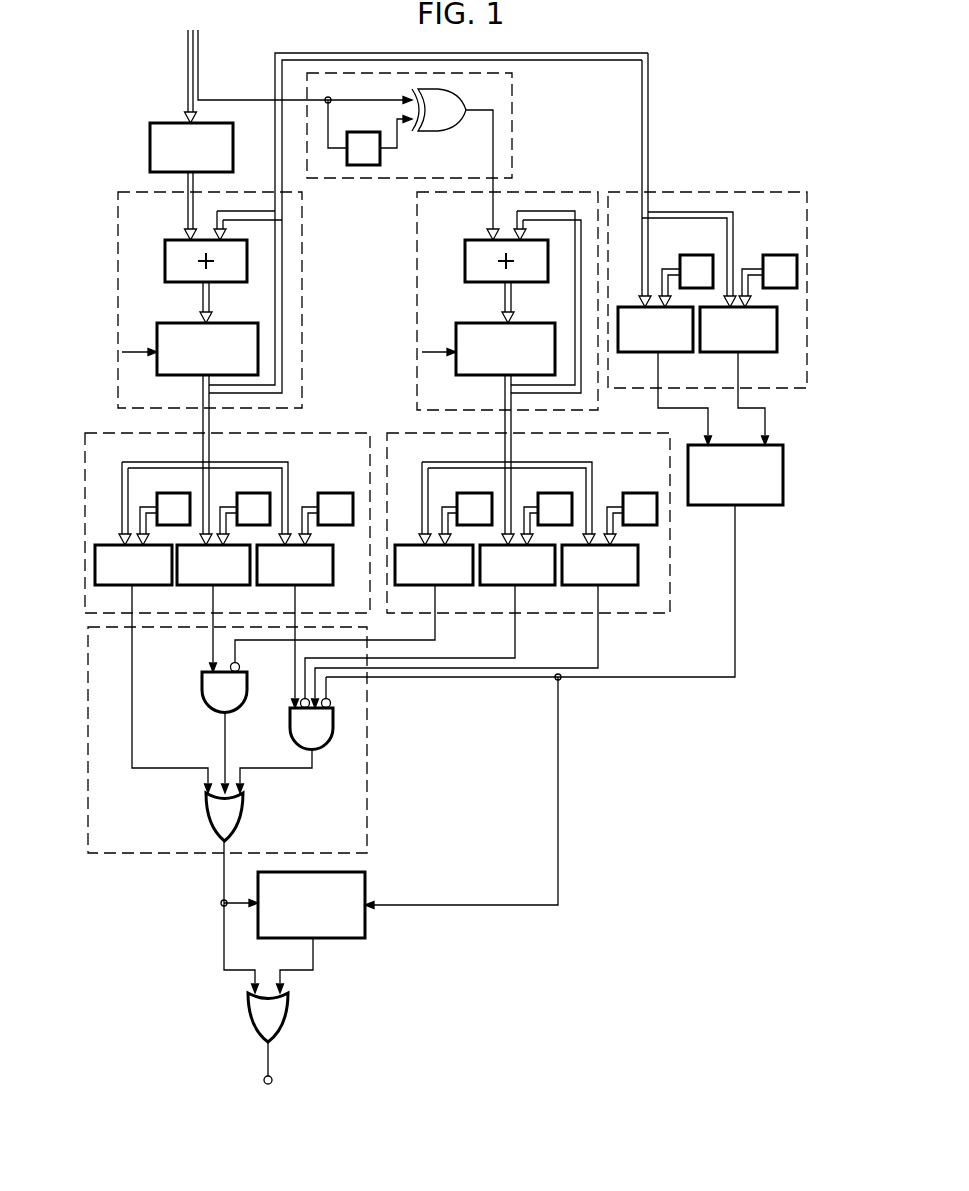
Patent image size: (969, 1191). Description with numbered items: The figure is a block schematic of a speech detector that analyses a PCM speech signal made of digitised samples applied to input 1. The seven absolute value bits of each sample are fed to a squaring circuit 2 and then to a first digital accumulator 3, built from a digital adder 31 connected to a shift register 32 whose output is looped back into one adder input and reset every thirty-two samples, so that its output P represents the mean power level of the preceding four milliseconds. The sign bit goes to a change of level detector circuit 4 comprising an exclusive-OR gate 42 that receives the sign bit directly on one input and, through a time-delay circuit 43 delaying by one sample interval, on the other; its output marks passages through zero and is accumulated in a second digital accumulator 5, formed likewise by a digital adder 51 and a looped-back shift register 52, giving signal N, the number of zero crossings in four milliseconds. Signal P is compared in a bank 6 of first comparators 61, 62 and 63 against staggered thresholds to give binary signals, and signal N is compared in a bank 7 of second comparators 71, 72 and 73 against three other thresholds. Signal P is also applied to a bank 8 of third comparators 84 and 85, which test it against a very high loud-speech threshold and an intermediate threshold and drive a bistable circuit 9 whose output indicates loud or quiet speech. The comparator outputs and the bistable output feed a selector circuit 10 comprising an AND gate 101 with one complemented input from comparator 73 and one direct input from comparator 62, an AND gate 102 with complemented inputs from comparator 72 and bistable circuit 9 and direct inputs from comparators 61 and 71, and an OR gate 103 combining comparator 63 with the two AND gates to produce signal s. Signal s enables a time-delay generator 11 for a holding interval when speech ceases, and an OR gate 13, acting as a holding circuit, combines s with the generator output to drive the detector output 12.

The input 1 is at (188, 61).
The squaring circuit 2 is at (172, 125).
The first digital accumulator 3 is at (383, 294).
The change of level detector circuit 4 is at (425, 156).
The second digital accumulator 5 is at (540, 339).
The bank of first digital comparators 6 is at (243, 488).
The bank of second digital comparators 7 is at (571, 562).
The bank of third comparators 8 is at (711, 249).
The bistable circuit 9 is at (750, 497).
The selector circuit 10 is at (265, 719).
The time-delay generator 11 is at (330, 938).
The output 12 is at (268, 1060).
The OR gate 13 is at (262, 1012).
The digital adder 31 is at (180, 248).
The shift register 32 is at (178, 330).
The exclusive-OR gate 42 is at (445, 113).
The time-delay circuit 43 is at (380, 152).
The digital adder 51 is at (478, 266).
The shift register 52 is at (470, 332).
The first comparator 61 is at (277, 572).
The first comparator 62 is at (196, 572).
The first comparator 63 is at (117, 572).
The second comparator 71 is at (582, 572).
The second comparator 72 is at (498, 572).
The second comparator 73 is at (418, 572).
The third comparator 84 is at (665, 340).
The third comparator 85 is at (752, 340).
The AND gate 101 is at (221, 699).
The AND gate 102 is at (303, 732).
The OR gate 103 is at (218, 814).